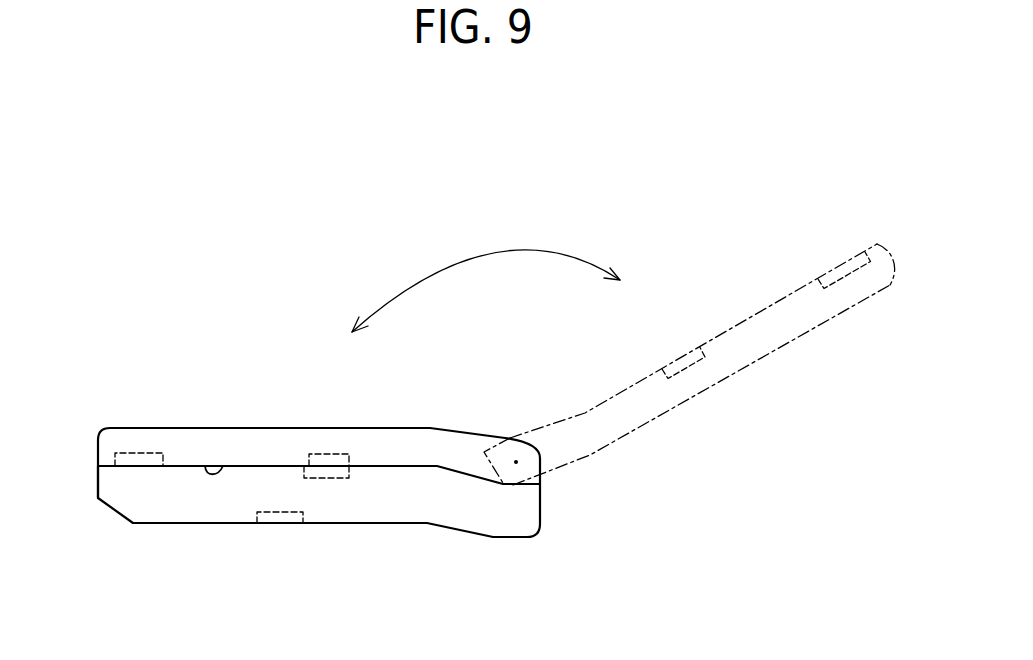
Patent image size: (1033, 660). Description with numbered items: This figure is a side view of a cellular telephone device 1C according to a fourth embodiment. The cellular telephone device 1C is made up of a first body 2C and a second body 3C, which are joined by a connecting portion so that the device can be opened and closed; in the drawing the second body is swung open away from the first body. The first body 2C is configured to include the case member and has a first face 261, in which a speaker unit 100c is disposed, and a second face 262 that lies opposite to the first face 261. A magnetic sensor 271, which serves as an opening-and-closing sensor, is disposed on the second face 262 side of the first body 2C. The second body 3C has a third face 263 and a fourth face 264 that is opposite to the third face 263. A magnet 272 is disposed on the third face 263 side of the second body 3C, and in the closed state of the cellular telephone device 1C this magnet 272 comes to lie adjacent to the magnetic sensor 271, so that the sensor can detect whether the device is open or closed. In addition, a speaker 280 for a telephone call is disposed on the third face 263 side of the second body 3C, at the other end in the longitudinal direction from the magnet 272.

The cellular telephone device 1C is at (663, 215).
The first body 2C is at (493, 527).
The second body 3C is at (427, 437).
The first face 261 is at (163, 525).
The second face 262 is at (100, 463).
The third face 263 is at (205, 463).
The fourth face 264 is at (270, 428).
The magnetic sensor 271 is at (350, 478).
The magnet 272 is at (335, 460).
The speaker 280 is at (143, 453).
The speaker unit 100c is at (280, 525).